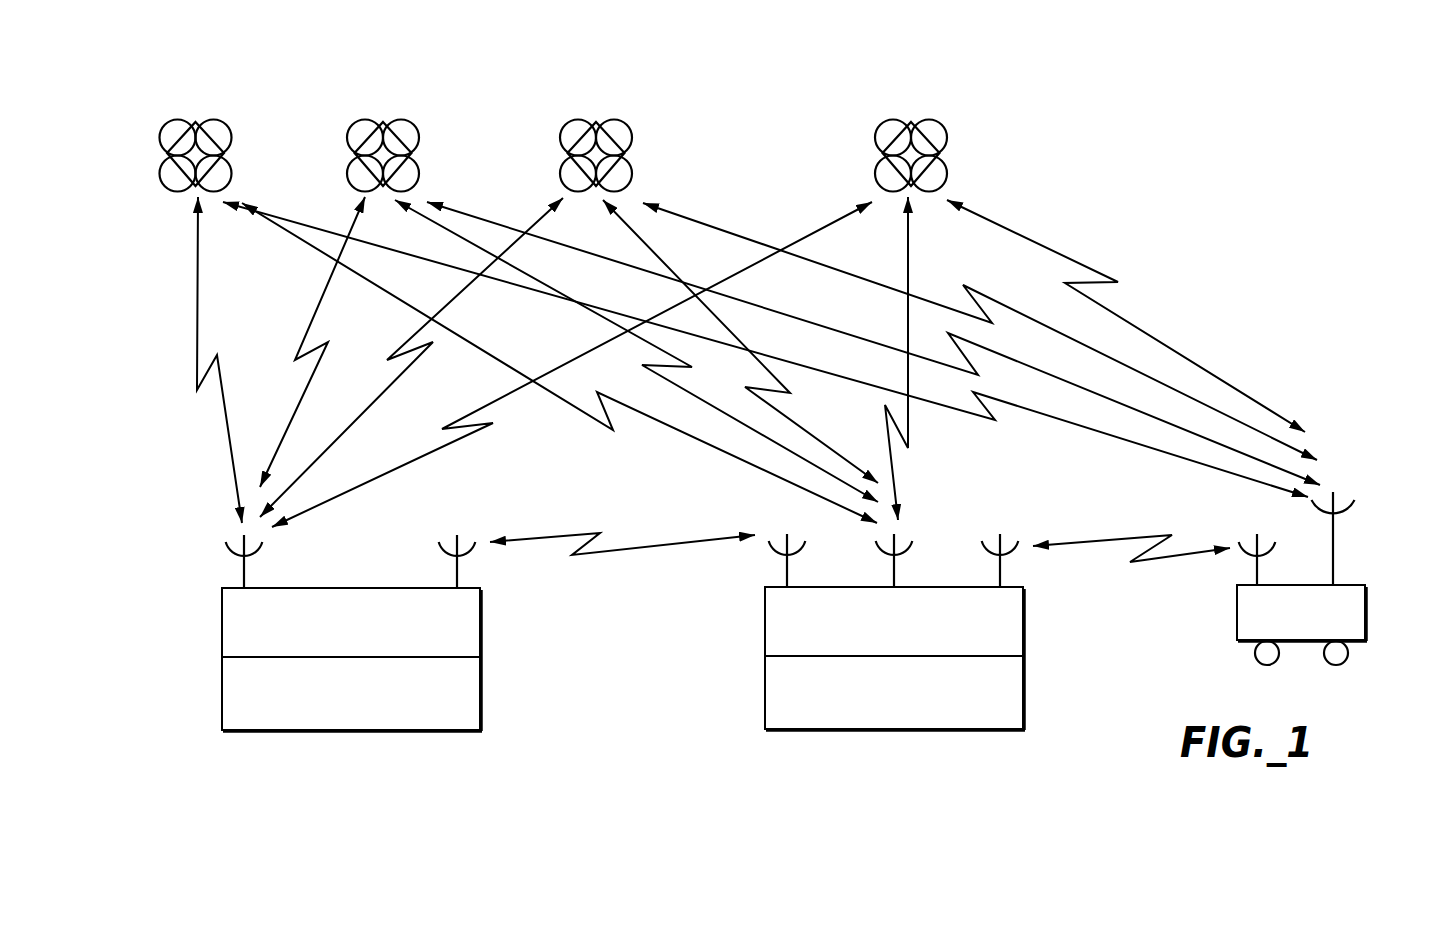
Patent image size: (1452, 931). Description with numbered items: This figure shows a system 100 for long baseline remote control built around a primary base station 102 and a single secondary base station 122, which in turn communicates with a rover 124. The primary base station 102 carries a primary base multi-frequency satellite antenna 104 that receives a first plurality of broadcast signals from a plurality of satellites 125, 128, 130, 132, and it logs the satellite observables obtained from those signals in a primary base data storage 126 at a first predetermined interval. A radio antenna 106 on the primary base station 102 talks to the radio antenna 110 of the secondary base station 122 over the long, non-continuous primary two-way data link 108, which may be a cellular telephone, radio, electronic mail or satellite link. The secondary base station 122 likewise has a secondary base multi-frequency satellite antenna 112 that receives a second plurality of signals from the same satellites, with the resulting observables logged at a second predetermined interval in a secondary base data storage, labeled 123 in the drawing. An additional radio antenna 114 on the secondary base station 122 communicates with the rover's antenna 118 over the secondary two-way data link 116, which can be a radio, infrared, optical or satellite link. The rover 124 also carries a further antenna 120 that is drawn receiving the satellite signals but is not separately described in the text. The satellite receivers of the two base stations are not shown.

The system for long baseline remote control 100 is at (1232, 158).
The primary base station (PBS) 102 is at (236, 620).
The primary base multi-frequency satellite antenna 104 is at (230, 554).
The radio antenna 106 is at (442, 554).
The primary data link 108 is at (638, 546).
The SBS radio antenna 110 is at (775, 553).
The secondary base multi-frequency satellite antenna 112 is at (881, 553).
The additional radio antenna 114 is at (988, 553).
The secondary two-way data link 116 is at (1158, 566).
The rover's antenna 118 is at (1248, 558).
The mobile unit satellite antenna 120 is at (1353, 512).
The secondary base station (SBS) 122 is at (778, 618).
The secondary data storage 123 is at (778, 698).
The rover 124 is at (1356, 607).
The satellite 125 is at (212, 121).
The primary base data storage 126 is at (236, 699).
The satellite 128 is at (399, 121).
The satellite 130 is at (612, 121).
The satellite 132 is at (927, 121).